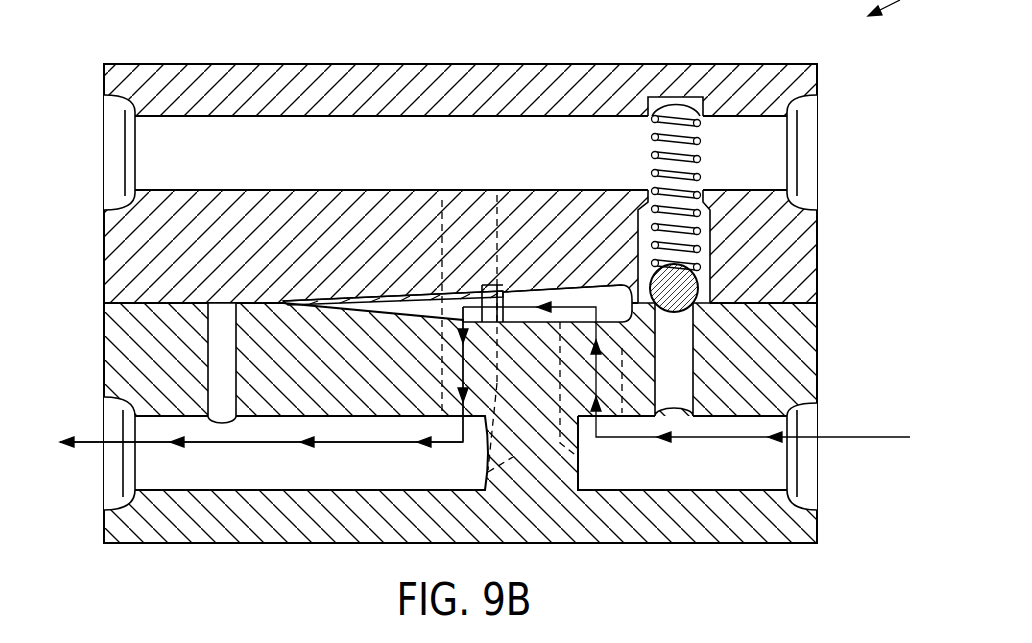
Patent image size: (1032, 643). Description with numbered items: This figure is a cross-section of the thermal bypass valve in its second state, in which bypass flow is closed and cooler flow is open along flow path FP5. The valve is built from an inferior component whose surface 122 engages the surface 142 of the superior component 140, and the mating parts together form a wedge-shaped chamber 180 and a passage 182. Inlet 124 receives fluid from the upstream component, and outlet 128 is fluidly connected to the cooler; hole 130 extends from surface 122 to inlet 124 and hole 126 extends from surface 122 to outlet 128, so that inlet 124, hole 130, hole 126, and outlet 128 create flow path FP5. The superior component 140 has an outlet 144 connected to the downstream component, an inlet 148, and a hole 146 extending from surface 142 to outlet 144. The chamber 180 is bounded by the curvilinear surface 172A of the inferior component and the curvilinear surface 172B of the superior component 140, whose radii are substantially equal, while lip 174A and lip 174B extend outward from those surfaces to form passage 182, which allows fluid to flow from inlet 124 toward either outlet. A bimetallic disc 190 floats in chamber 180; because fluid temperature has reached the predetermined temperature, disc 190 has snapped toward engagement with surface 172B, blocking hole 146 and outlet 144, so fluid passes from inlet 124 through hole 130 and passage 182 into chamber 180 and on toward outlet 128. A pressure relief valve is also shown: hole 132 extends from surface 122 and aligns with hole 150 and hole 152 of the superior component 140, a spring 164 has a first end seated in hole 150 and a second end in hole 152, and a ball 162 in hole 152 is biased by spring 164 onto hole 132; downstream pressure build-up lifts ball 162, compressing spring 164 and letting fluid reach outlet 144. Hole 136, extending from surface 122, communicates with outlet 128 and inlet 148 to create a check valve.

The surface 122 is at (128, 305).
The inlet 124 is at (797, 477).
The hole 126 is at (497, 383).
The outlet 128 is at (133, 474).
The hole 130 is at (623, 348).
The hole 132 is at (693, 393).
The hole 136 is at (207, 358).
The superior component 140 is at (288, 86).
The surface 142 is at (153, 301).
The outlet 144 is at (791, 127).
The hole 146 is at (442, 200).
The inlet 148 is at (124, 153).
The hole 150 is at (703, 102).
The hole 152 is at (713, 237).
The ball 162 is at (690, 282).
The spring 164 is at (652, 152).
The surface 172A is at (383, 312).
The surface 172B is at (347, 298).
The lip 174A is at (533, 323).
The lip 174B is at (551, 284).
The chamber 180 is at (441, 311).
The passage 182 is at (590, 283).
The bimetallic disc 190 is at (402, 298).
The flow path FP5 is at (233, 443).